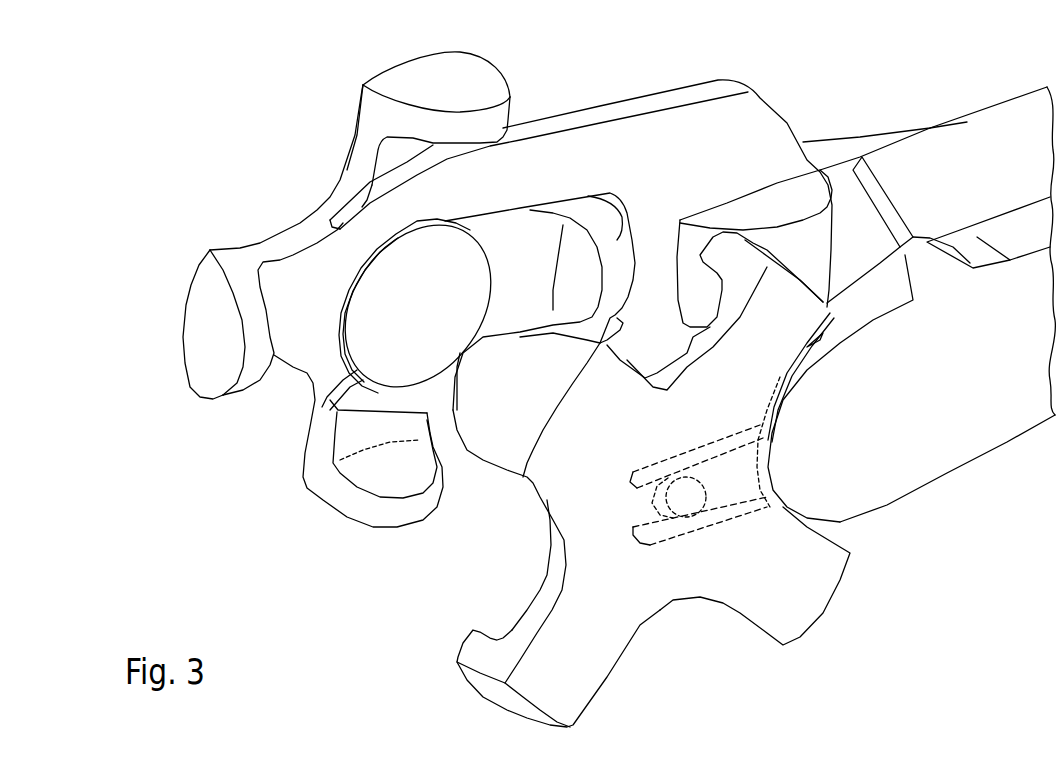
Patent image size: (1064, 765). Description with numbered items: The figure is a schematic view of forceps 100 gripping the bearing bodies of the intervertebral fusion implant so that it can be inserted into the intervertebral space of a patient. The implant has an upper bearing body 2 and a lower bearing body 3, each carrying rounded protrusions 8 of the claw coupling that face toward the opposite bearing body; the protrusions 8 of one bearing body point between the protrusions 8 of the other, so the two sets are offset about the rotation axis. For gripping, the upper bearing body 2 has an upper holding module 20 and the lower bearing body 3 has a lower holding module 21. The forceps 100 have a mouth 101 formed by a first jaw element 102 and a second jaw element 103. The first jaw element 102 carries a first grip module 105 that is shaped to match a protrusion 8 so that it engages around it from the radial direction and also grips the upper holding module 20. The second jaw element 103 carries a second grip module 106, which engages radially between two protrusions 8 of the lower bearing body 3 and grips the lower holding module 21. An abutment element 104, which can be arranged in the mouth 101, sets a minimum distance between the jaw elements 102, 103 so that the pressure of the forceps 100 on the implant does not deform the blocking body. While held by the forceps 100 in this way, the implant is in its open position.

The upper bearing body 2 is at (307, 230).
The lower bearing body 3 is at (797, 600).
The protrusions 8 is at (477, 83).
The upper holding module 20 is at (370, 343).
The lower holding module 21 is at (685, 498).
The forceps 100 is at (945, 62).
The mouth 101 is at (990, 405).
The first jaw element 102 is at (717, 90).
The second jaw element 103 is at (865, 470).
The abutment element 104 is at (795, 200).
The first grip module 105 is at (407, 197).
The second grip module 106 is at (655, 533).